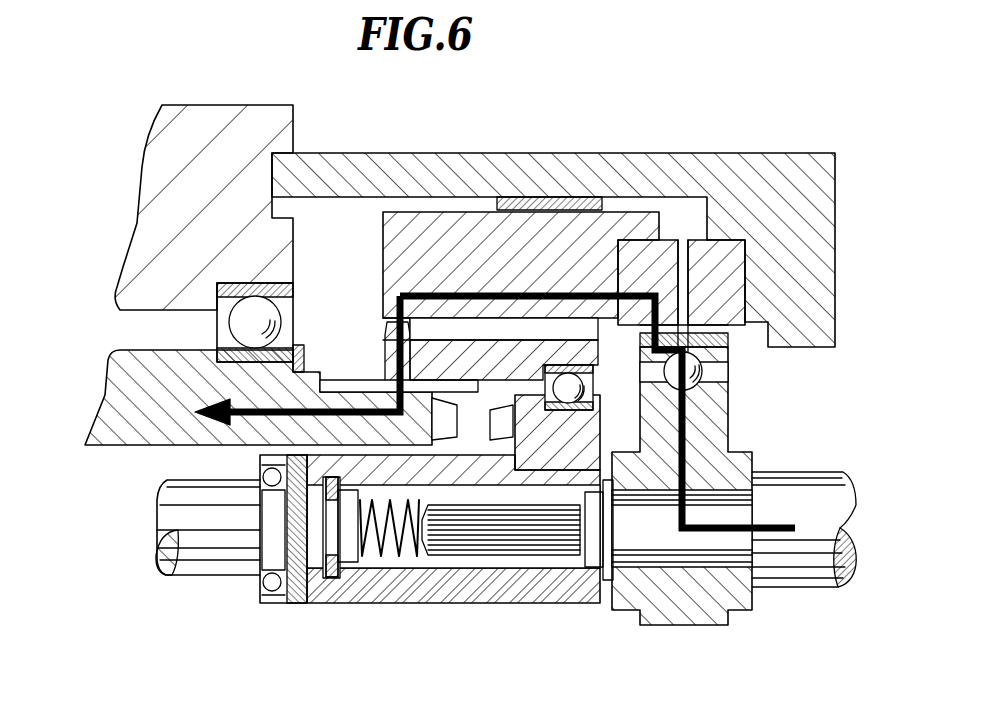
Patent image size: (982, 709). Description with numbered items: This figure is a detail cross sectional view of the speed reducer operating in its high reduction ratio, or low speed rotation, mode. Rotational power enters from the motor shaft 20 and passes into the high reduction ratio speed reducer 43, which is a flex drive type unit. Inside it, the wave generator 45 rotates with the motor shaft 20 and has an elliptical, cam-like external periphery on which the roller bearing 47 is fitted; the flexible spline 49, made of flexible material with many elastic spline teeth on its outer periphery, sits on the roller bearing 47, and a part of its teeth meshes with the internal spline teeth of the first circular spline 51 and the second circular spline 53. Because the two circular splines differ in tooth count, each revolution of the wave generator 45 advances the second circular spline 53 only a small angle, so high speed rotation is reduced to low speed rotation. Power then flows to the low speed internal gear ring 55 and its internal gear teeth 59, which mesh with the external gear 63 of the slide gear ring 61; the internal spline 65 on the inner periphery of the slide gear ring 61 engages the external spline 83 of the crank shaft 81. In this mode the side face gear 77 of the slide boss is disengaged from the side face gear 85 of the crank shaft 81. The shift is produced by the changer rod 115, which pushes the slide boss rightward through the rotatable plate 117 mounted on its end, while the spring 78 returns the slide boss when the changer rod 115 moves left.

The motor shaft 20 is at (727, 517).
The high reduction ratio speed reducer 43 is at (683, 226).
The wave generator 45 is at (700, 410).
The roller bearing 47 is at (690, 362).
The flexible spline 49 is at (727, 347).
The first circular spline 51 is at (727, 257).
The second circular spline 53 is at (640, 250).
The low speed internal gear ring 55 is at (458, 230).
The internal gear teeth 59 is at (385, 307).
The slide gear ring 61 is at (598, 345).
The external gear 63 is at (385, 332).
The internal spline 65 is at (457, 387).
The side face gear 77 is at (502, 427).
The spring 78 is at (390, 555).
The crank shaft 81 is at (120, 402).
The external spline 83 is at (343, 385).
The side face gear 85 is at (442, 423).
The changer rod 115 is at (223, 557).
The rotatable plate 117 is at (293, 603).